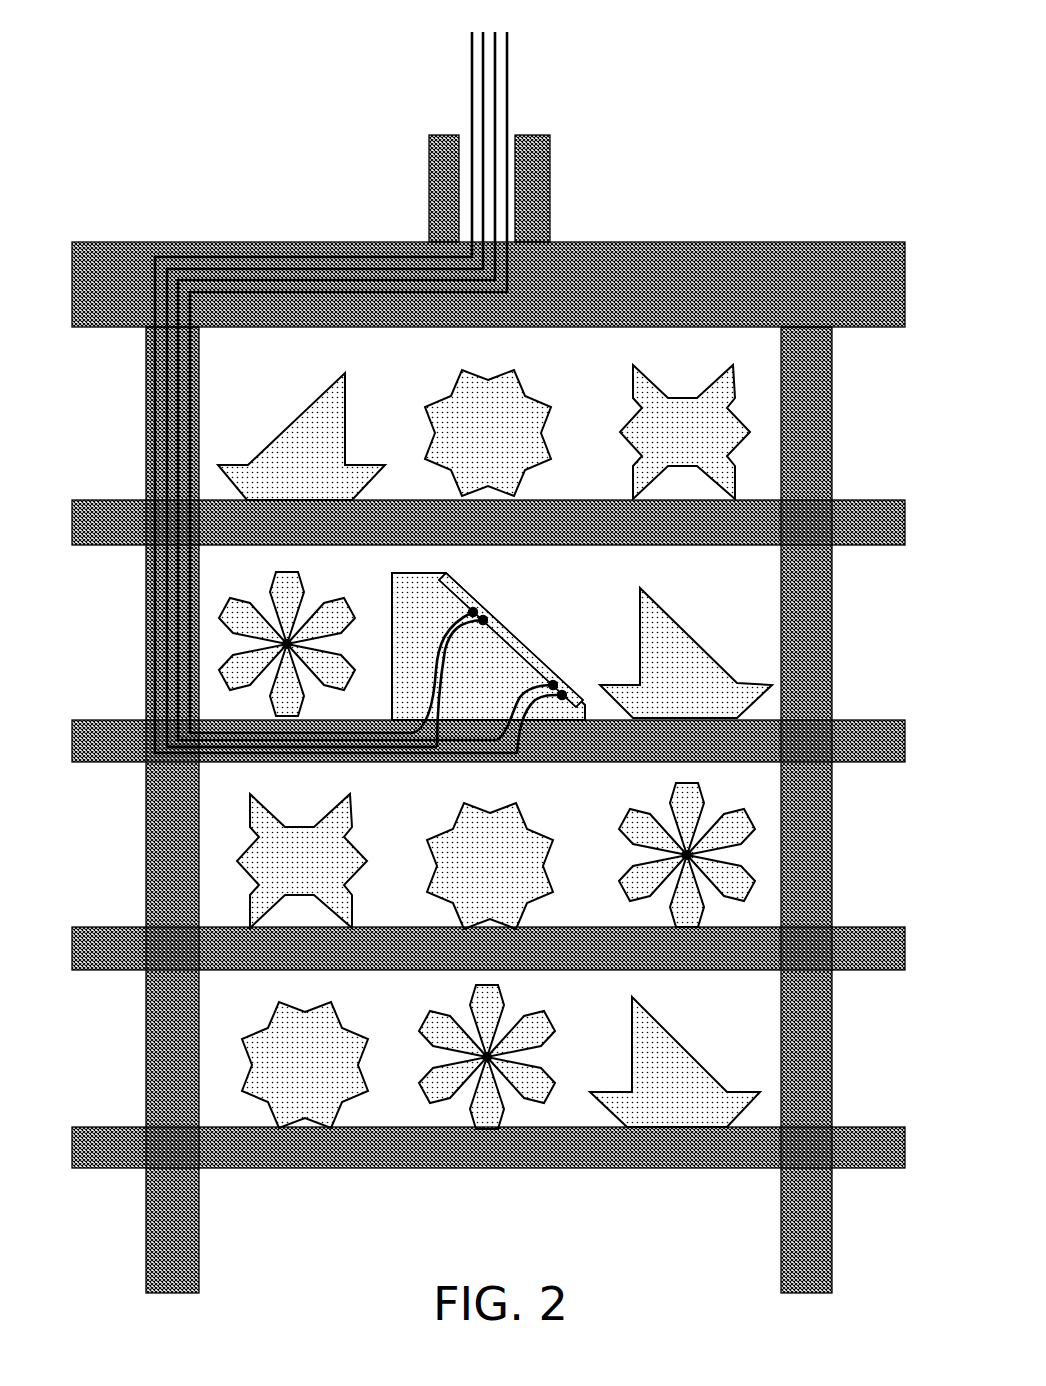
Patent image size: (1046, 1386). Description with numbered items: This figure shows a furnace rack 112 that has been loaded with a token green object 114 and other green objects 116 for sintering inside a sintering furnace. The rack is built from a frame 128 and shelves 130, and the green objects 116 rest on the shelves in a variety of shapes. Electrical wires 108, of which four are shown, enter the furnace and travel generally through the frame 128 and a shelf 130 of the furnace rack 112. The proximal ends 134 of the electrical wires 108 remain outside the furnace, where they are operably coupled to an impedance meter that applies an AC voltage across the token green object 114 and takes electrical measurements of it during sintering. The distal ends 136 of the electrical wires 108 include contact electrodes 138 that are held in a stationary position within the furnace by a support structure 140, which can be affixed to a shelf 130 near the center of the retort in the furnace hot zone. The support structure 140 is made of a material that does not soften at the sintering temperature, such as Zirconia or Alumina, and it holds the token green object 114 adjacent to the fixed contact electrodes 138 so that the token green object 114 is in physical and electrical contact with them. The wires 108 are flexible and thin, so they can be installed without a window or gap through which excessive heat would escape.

The electrical wires 108 is at (373, 392).
The furnace rack 112 is at (499, 714).
The token green object 114 is at (523, 644).
The green objects 116 is at (343, 375).
The frame 128 is at (290, 242).
The shelf 130 is at (870, 762).
The proximal ends 134 is at (374, 381).
The distal ends 136 is at (428, 628).
The contact electrodes 138 is at (470, 609).
The support structure 140 is at (392, 582).